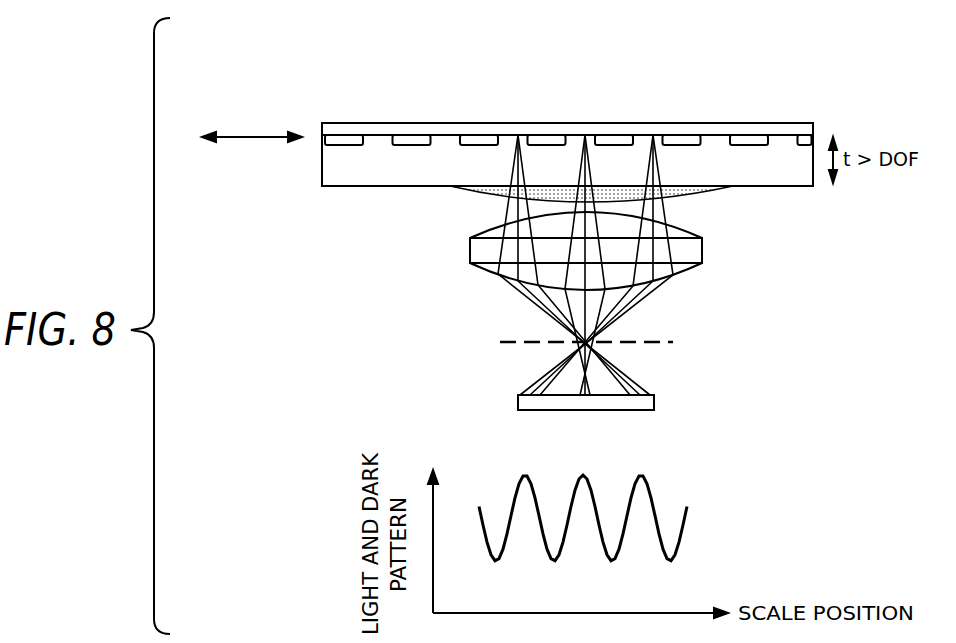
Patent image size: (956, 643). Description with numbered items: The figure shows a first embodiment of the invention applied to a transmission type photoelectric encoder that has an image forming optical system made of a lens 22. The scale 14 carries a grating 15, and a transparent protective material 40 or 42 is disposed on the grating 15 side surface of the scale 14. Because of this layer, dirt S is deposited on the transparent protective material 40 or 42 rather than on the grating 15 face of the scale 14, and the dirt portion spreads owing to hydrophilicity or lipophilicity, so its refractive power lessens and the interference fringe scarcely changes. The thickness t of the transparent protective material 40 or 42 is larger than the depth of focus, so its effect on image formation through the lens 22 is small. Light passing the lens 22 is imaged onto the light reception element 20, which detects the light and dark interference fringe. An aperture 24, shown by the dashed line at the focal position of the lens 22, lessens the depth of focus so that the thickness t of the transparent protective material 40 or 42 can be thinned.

The scale 14 is at (362, 122).
The grating 15 is at (403, 140).
The transparent protective material 40 is at (539, 189).
The transparent protective material 42 is at (351, 178).
The lens 22 is at (470, 254).
The aperture 24 is at (500, 342).
The light reception element 20 is at (518, 399).
The dirt S is at (703, 192).